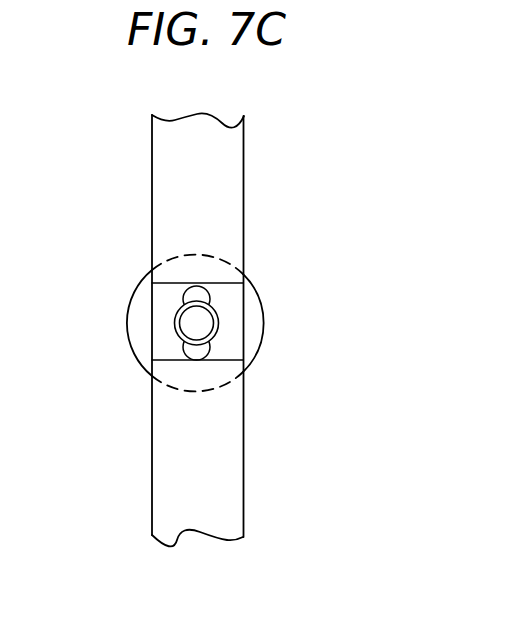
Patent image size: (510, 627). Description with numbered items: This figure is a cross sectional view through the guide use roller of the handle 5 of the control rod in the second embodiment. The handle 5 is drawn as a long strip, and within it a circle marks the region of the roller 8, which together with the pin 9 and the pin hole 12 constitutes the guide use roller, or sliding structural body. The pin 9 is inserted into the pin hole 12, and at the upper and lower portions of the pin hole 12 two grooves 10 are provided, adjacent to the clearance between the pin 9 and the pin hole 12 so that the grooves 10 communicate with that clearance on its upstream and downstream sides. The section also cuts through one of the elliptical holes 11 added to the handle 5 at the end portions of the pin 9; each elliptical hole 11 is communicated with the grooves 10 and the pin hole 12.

The handle 5 is at (244, 162).
The roller 8 is at (255, 362).
The pin 9 is at (194, 325).
The grooves 10 is at (184, 298).
The elliptical holes 11 is at (168, 283).
The pin hole 12 is at (218, 327).